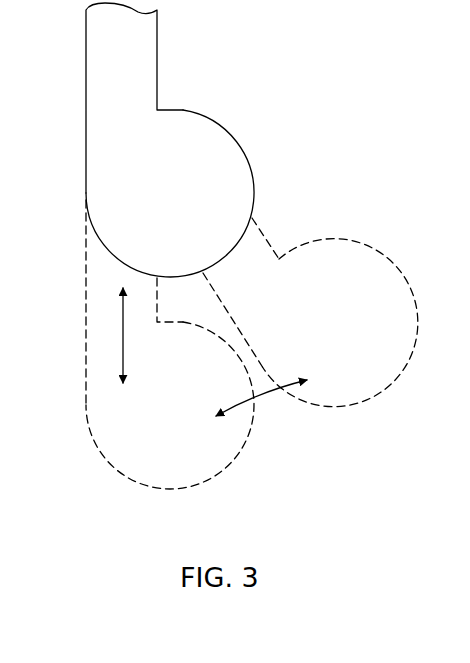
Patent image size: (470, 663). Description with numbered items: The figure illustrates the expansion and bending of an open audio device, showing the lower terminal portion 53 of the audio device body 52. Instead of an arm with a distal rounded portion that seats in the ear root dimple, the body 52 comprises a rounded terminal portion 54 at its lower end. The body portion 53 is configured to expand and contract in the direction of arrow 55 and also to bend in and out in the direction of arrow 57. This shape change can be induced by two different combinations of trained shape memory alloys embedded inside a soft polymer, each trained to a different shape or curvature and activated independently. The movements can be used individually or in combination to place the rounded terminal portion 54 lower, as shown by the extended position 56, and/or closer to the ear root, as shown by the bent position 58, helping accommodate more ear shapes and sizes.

The audio device body 52 is at (176, 48).
The lower terminal portion 53 is at (98, 59).
The rounded terminal portion 54 is at (213, 138).
The arrow 55 is at (120, 350).
The extended position 56 is at (105, 455).
The arrow 57 is at (278, 400).
The bent position 58 is at (373, 252).